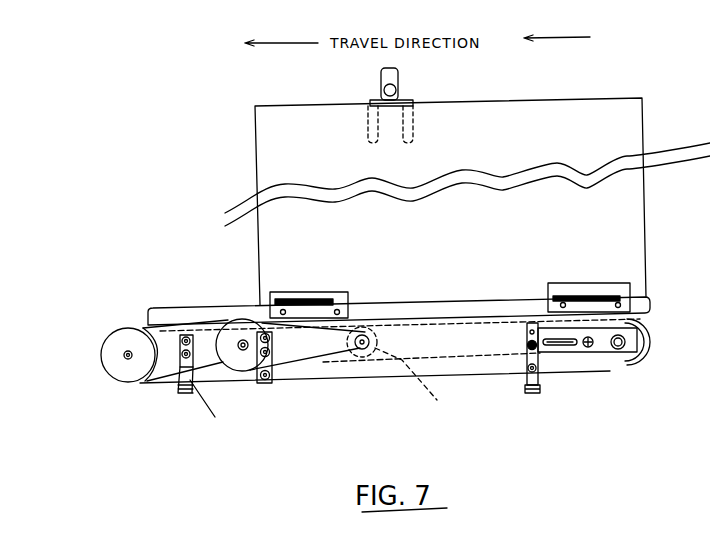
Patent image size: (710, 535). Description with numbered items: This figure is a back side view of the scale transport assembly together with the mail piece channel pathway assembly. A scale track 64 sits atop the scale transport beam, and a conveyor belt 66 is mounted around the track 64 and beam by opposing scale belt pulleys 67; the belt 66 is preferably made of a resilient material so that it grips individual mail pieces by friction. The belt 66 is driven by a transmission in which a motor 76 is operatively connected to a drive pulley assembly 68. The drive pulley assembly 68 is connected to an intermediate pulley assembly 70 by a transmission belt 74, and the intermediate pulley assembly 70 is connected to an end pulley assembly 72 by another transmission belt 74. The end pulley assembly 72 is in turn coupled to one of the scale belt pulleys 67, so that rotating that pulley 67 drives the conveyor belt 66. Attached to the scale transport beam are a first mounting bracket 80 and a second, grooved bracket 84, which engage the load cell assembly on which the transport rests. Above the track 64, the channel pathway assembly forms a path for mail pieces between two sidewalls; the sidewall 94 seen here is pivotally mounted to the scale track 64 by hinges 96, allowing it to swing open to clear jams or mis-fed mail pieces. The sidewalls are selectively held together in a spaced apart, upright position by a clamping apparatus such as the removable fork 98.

The scale track 64 is at (163, 313).
The conveyor belt 66 is at (587, 377).
The scale belt pulley 67 is at (620, 367).
The drive pulley assembly 68 is at (367, 357).
The intermediate pulley assembly 70 is at (240, 372).
The end pulley assembly 72 is at (113, 352).
The transmission belt 74 is at (162, 380).
The motor 76 is at (437, 400).
The first mounting bracket 80 is at (523, 405).
The grooved bracket 84 is at (215, 418).
The sidewall 94 is at (583, 118).
The hinge 96 is at (330, 292).
The removable fork 98 is at (400, 82).